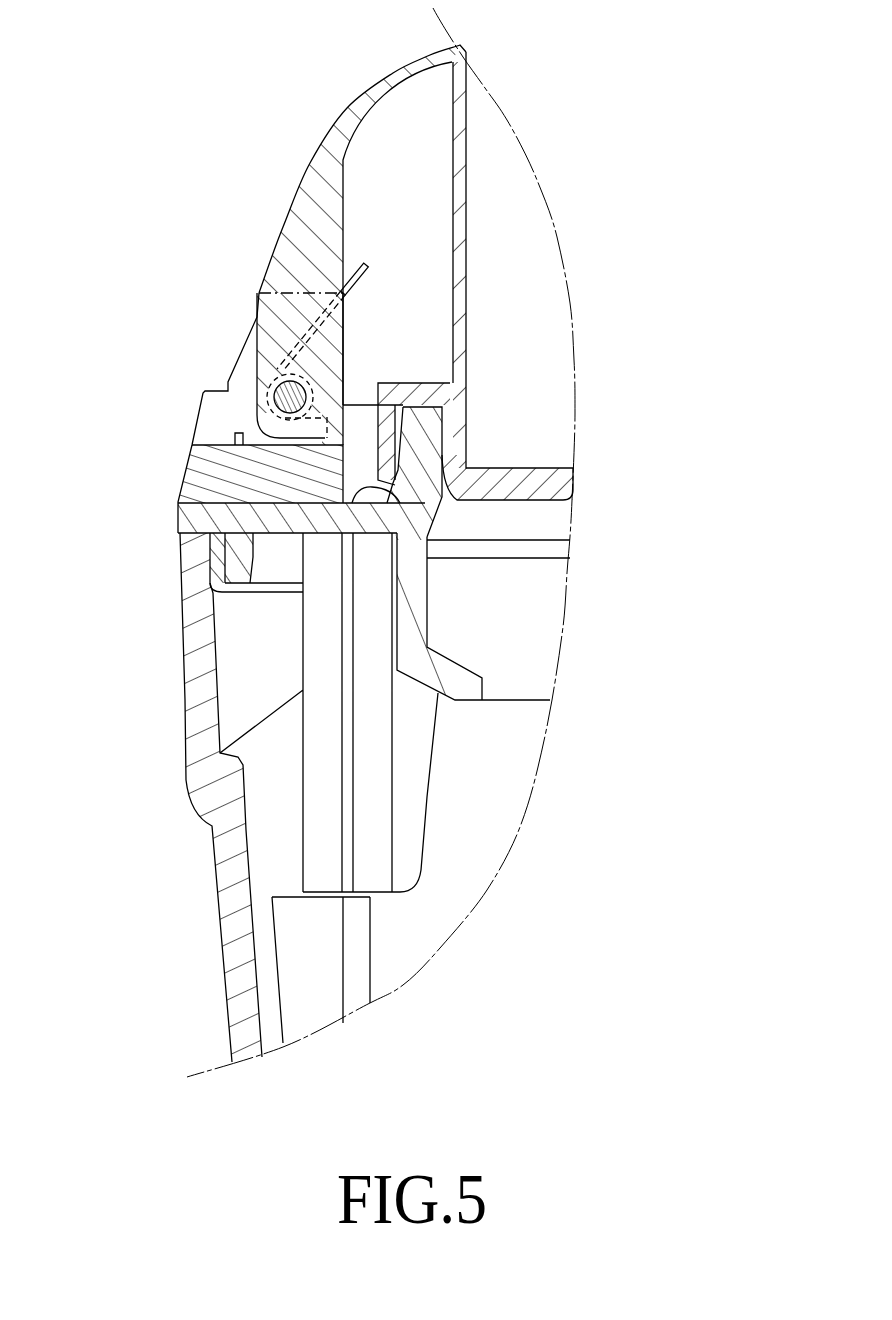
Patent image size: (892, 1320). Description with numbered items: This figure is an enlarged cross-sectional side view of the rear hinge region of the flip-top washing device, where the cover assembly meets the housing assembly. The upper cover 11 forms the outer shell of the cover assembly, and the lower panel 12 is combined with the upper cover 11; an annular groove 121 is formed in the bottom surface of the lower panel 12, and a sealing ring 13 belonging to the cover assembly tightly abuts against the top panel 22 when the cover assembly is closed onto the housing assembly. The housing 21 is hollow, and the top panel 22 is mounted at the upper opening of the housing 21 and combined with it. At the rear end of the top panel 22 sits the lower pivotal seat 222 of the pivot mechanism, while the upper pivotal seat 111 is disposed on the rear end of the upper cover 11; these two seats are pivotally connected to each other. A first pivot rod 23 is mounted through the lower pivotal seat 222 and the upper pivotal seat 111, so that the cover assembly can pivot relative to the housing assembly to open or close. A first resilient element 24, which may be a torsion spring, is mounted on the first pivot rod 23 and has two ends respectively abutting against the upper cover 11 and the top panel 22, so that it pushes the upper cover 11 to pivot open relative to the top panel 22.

The upper cover 11 is at (368, 90).
The lower panel 12 is at (512, 492).
The annular groove 121 is at (443, 423).
The sealing ring 13 is at (435, 465).
The housing 21 is at (227, 870).
The top panel 22 is at (460, 693).
The lower pivotal seat 222 is at (255, 438).
The first pivot rod 23 is at (275, 383).
The first resilient element 24 is at (340, 290).
The upper pivotal seat 111 is at (265, 417).